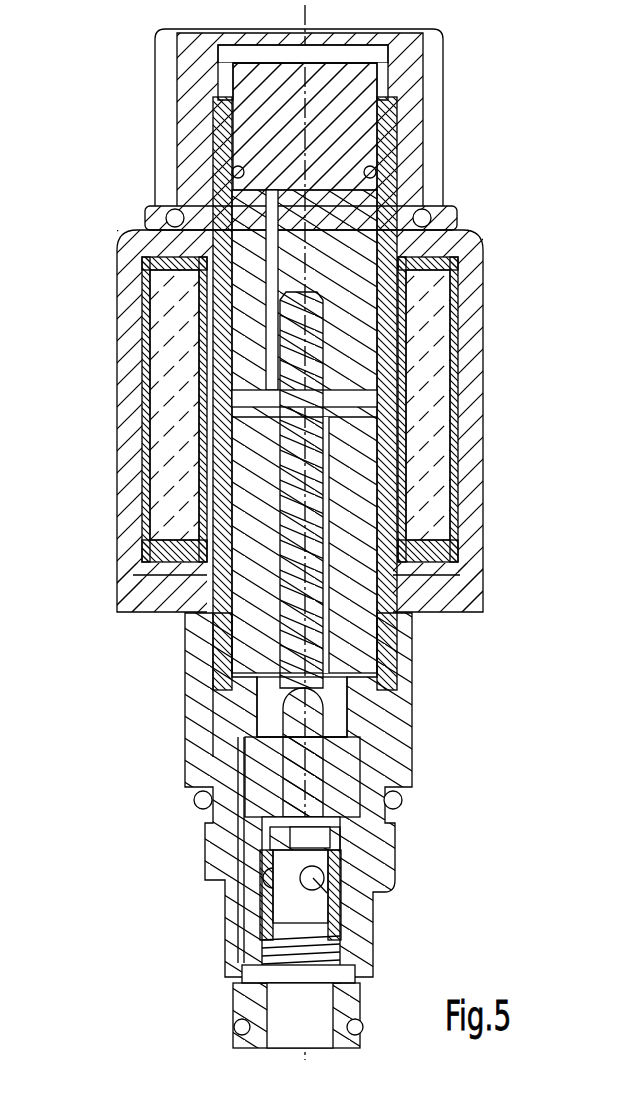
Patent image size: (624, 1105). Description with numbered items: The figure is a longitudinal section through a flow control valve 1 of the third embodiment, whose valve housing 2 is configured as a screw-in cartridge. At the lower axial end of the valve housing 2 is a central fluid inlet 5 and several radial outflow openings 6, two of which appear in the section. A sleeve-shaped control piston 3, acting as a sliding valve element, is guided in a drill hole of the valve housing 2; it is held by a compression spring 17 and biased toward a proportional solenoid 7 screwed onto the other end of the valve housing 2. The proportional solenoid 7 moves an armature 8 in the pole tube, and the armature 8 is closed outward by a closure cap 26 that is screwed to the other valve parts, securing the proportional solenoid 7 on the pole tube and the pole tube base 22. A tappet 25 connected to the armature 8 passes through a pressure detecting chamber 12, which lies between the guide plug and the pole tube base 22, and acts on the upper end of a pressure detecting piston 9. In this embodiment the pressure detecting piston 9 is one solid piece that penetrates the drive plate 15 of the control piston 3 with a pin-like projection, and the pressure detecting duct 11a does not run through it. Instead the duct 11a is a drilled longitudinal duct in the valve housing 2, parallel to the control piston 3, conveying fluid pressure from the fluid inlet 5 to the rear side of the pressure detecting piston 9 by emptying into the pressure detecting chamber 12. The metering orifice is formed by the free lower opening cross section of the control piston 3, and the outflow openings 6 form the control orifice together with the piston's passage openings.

The flow control valve 1 is at (112, 148).
The closure cap 26 is at (403, 97).
The armature 8 is at (415, 207).
The proportional solenoid 7 is at (462, 332).
The pole tube base 22 is at (362, 470).
The tappet 25 is at (318, 557).
The pressure detecting chamber 12 is at (330, 705).
The valve housing 2 is at (397, 730).
The drive plate 15 is at (253, 812).
The pressure detecting duct 11a is at (233, 858).
The pressure detecting piston 9 is at (300, 780).
The control piston 3 is at (345, 847).
The outflow openings 6 is at (353, 903).
The compression spring 17 is at (347, 952).
The fluid inlet 5 is at (312, 1020).